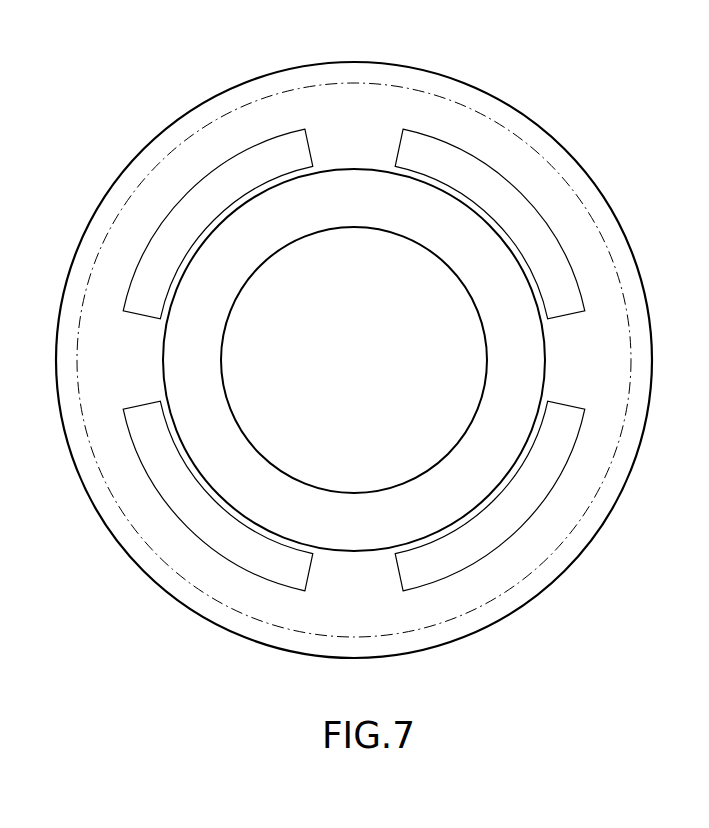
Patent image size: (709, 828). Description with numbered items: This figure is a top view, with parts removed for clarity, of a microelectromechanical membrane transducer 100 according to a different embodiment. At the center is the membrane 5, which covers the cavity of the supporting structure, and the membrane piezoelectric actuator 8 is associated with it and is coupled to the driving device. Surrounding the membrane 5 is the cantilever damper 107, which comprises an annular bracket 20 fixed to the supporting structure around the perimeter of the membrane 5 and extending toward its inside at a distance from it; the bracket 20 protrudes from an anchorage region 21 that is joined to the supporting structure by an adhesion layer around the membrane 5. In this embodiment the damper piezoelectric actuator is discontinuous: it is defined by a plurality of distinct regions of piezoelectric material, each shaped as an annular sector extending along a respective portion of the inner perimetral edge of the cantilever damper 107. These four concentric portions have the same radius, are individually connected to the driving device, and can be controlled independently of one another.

The microelectromechanical membrane transducer 100 is at (150, 98).
The cantilever damper 107 is at (370, 110).
The bracket 20 is at (522, 168).
The anchorage region 21 is at (170, 602).
The membrane 5 is at (498, 432).
The membrane piezoelectric actuator 8 is at (362, 373).